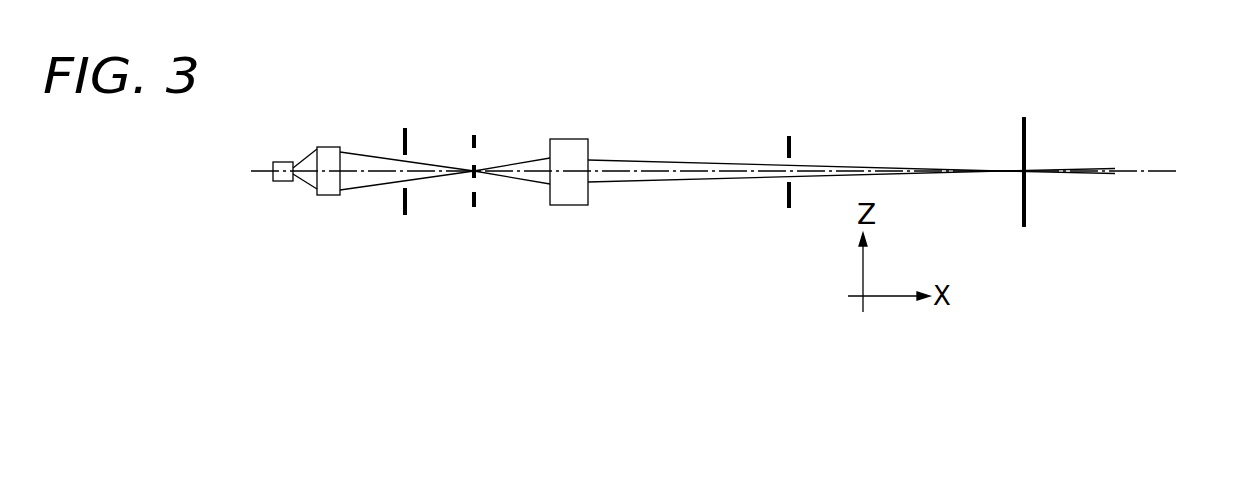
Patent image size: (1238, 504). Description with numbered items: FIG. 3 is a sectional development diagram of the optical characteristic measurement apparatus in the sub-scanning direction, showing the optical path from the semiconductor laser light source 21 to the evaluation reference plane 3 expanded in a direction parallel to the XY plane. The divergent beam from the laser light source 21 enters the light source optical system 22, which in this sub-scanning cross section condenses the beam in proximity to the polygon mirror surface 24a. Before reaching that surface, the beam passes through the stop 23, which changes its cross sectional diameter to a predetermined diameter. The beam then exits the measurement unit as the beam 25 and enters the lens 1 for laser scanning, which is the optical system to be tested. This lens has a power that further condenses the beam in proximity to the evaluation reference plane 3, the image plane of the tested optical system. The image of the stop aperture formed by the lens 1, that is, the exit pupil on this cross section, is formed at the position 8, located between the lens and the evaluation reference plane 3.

The semiconductor laser light source 21 is at (283, 162).
The light source optical system 22 is at (328, 147).
The stop 23 is at (403, 128).
The polygon mirror surface 24a is at (475, 135).
The lens for laser scanning 1 is at (571, 139).
The beam 25 is at (681, 171).
The exit pupil 8 is at (791, 148).
The evaluation reference plane 3 is at (1026, 140).